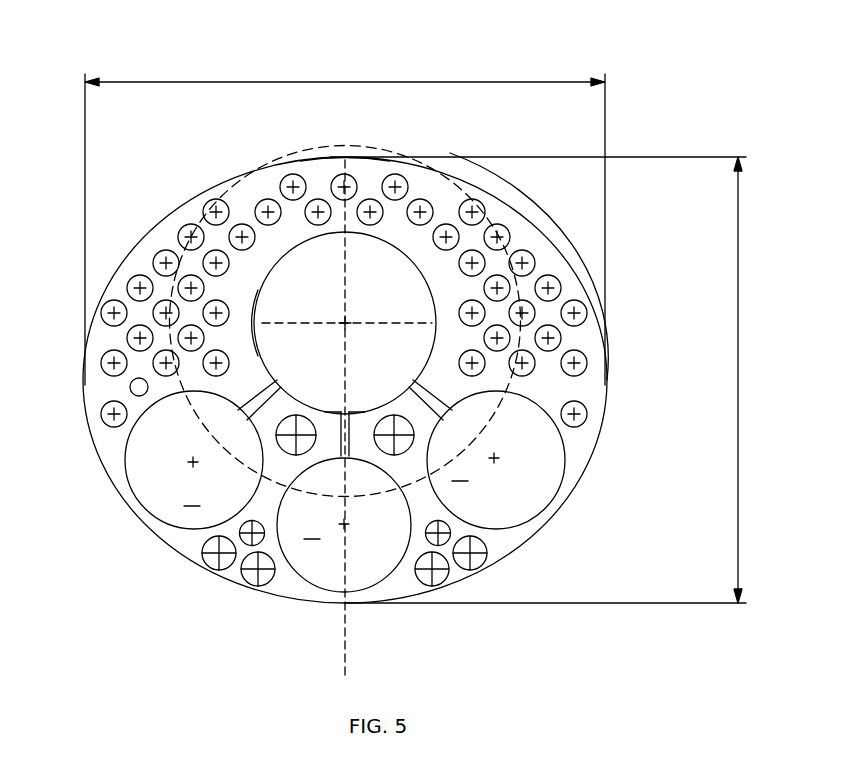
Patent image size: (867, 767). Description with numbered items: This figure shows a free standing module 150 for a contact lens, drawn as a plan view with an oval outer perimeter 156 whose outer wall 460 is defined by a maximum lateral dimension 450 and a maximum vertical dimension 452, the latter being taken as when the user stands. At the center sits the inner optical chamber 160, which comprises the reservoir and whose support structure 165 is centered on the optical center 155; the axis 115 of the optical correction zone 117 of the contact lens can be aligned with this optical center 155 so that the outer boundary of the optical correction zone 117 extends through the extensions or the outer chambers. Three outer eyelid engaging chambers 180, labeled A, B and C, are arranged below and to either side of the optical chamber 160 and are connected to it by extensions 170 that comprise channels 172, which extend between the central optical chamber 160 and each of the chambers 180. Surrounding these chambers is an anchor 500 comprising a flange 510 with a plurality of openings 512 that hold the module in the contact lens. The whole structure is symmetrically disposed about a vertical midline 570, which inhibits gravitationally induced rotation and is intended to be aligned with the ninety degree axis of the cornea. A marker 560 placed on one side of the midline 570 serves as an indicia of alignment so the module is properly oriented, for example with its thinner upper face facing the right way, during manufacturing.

The module 150 is at (499, 42).
The housing body 156 is at (453, 146).
The outer wall 460 is at (493, 197).
The flange 510 is at (318, 168).
The anchor 500 is at (275, 136).
The midline 570 is at (343, 627).
The optical center 155 is at (347, 320).
The axis 115 is at (348, 326).
The central optical chamber 160 is at (297, 281).
The support structure 165 is at (248, 292).
The extensions 170 is at (256, 393).
The channels 172 is at (413, 379).
The eyelid engaging chambers 180 is at (392, 475).
The optical correction zone 117 is at (490, 418).
The marker 560 is at (130, 387).
The openings 512 is at (258, 201).
The maximum lateral dimension 450 is at (338, 80).
The maximum vertical dimension 452 is at (740, 353).